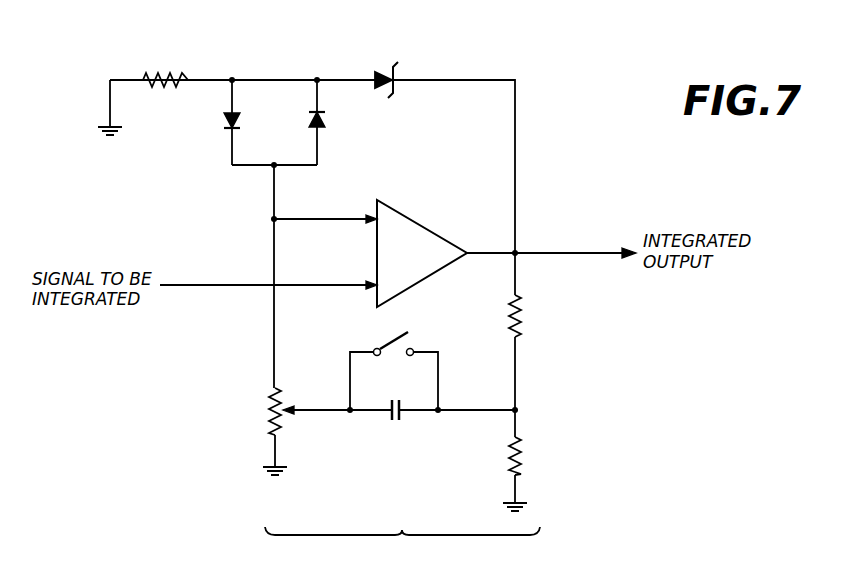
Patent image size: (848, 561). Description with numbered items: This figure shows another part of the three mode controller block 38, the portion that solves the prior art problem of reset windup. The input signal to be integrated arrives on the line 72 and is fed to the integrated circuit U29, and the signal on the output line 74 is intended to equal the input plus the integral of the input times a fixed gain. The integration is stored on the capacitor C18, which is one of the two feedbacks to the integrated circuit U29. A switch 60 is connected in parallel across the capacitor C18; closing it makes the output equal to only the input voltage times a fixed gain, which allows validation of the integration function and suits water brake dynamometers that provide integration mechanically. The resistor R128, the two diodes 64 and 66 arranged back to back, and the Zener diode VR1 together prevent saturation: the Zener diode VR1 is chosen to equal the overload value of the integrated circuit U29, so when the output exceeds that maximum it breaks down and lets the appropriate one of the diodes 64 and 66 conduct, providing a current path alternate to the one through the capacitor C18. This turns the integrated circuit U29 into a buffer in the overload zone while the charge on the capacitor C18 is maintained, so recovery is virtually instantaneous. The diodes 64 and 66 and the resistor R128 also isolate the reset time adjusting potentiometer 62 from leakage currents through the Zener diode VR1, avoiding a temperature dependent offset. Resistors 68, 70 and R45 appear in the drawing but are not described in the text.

The resistor R128 is at (182, 78).
The Zener diode VR1 is at (390, 68).
The diode 64 is at (224, 122).
The diode 66 is at (322, 125).
The integrated circuit U29 is at (422, 253).
The input line 72 is at (230, 284).
The output line 74 is at (549, 253).
The resistor 68 is at (522, 322).
The resistor 70 is at (524, 456).
The reset time adjusting potentiometer 62 is at (274, 388).
The switch 60 is at (382, 346).
The capacitor C18 is at (432, 420).
The three mode controller block 38 is at (402, 544).
The resistor R45 is at (690, 559).